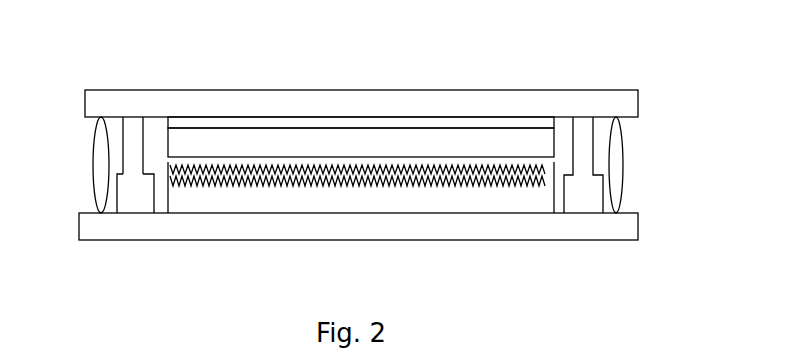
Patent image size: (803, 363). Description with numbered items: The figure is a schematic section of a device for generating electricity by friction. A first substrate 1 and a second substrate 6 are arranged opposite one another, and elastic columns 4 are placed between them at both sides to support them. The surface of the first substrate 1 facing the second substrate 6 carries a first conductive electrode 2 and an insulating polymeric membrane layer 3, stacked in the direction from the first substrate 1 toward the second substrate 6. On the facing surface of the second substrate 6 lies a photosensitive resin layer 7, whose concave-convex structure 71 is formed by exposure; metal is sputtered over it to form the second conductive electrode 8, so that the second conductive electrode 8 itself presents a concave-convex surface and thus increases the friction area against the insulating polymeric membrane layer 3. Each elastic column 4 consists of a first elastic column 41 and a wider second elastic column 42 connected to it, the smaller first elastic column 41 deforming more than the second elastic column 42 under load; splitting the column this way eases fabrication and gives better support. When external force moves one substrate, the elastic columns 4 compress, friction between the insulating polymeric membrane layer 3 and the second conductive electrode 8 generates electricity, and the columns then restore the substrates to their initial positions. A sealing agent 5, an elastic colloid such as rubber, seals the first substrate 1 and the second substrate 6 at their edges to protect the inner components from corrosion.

The first substrate 1 is at (435, 108).
The first conductive electrode 2 is at (527, 127).
The insulating polymeric membrane layer 3 is at (543, 135).
The elastic column 4 is at (595, 162).
The sealing agent 5 is at (617, 185).
The second substrate 6 is at (623, 235).
The photosensitive resin layer 7 is at (467, 196).
The concave-convex structure 71 is at (302, 187).
The second conductive electrode 8 is at (408, 173).
The first elastic column 41 is at (130, 158).
The second elastic column 42 is at (130, 202).